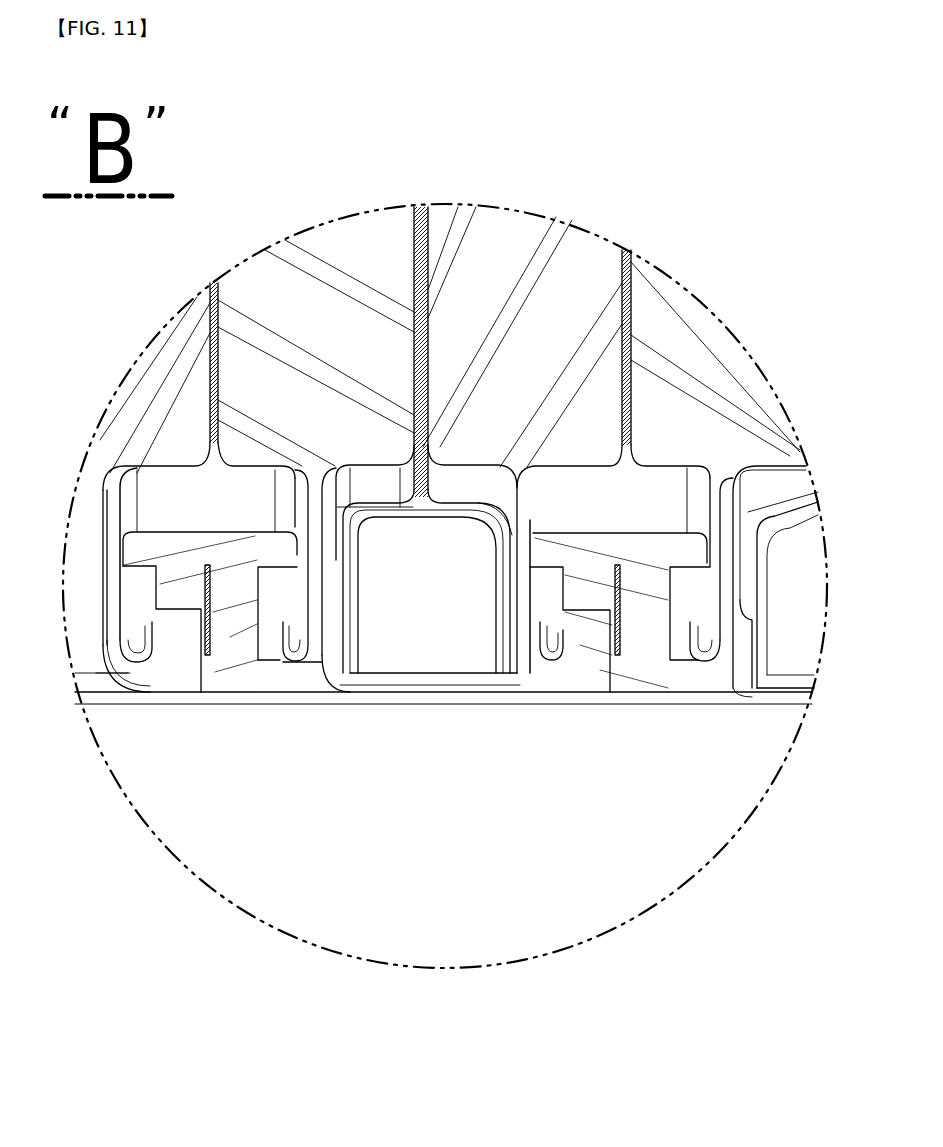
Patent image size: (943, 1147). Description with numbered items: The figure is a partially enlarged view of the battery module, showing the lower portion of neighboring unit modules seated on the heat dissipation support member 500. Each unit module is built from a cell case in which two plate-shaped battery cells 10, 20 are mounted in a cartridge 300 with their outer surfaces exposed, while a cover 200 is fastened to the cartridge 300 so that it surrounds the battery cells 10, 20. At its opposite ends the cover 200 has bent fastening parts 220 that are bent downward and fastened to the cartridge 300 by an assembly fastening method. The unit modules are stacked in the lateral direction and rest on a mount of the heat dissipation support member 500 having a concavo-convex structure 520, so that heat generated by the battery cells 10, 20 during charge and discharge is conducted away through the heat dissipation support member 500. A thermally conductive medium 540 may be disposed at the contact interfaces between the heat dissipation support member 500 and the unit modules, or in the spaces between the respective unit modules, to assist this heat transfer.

The plate-shaped battery cell 10 is at (330, 264).
The plate-shaped battery cell 20 is at (530, 264).
The cover 200 is at (420, 212).
The bent fastening part 220 is at (287, 694).
The cartridge 300 is at (222, 668).
The heat dissipation support member 500 is at (368, 703).
The concavo-convex structure 520 is at (431, 560).
The thermally conductive medium 540 is at (478, 492).